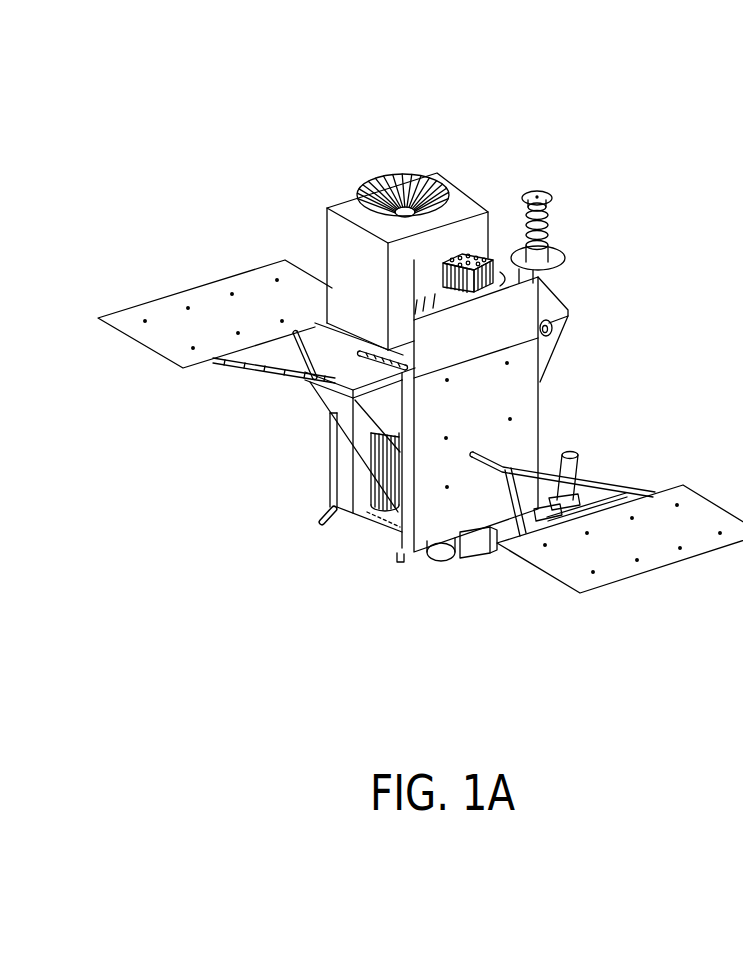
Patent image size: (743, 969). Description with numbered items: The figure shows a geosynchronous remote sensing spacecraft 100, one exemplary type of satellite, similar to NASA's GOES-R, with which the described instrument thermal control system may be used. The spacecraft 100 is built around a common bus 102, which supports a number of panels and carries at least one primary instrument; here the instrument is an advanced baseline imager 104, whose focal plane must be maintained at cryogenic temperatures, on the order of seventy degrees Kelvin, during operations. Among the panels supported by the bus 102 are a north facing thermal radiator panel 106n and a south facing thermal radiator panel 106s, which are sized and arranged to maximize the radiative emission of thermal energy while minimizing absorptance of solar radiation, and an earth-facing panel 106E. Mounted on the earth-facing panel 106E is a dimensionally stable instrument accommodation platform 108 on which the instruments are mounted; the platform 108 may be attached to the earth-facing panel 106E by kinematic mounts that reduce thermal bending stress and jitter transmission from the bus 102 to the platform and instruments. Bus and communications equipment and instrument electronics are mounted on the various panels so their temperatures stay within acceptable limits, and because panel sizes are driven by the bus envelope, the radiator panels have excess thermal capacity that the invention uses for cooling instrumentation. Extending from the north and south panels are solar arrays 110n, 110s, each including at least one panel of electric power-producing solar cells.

The spacecraft 100 is at (380, 39).
The bus 102 is at (313, 418).
The advanced baseline imager 104 is at (453, 180).
The north facing thermal radiator panel 106n is at (328, 462).
The south facing thermal radiator panel 106s is at (528, 422).
The earth-facing panel 106E is at (393, 403).
The instrument accommodation platform 108 is at (325, 335).
The north solar array 110n is at (150, 305).
The south solar array 110s is at (655, 545).